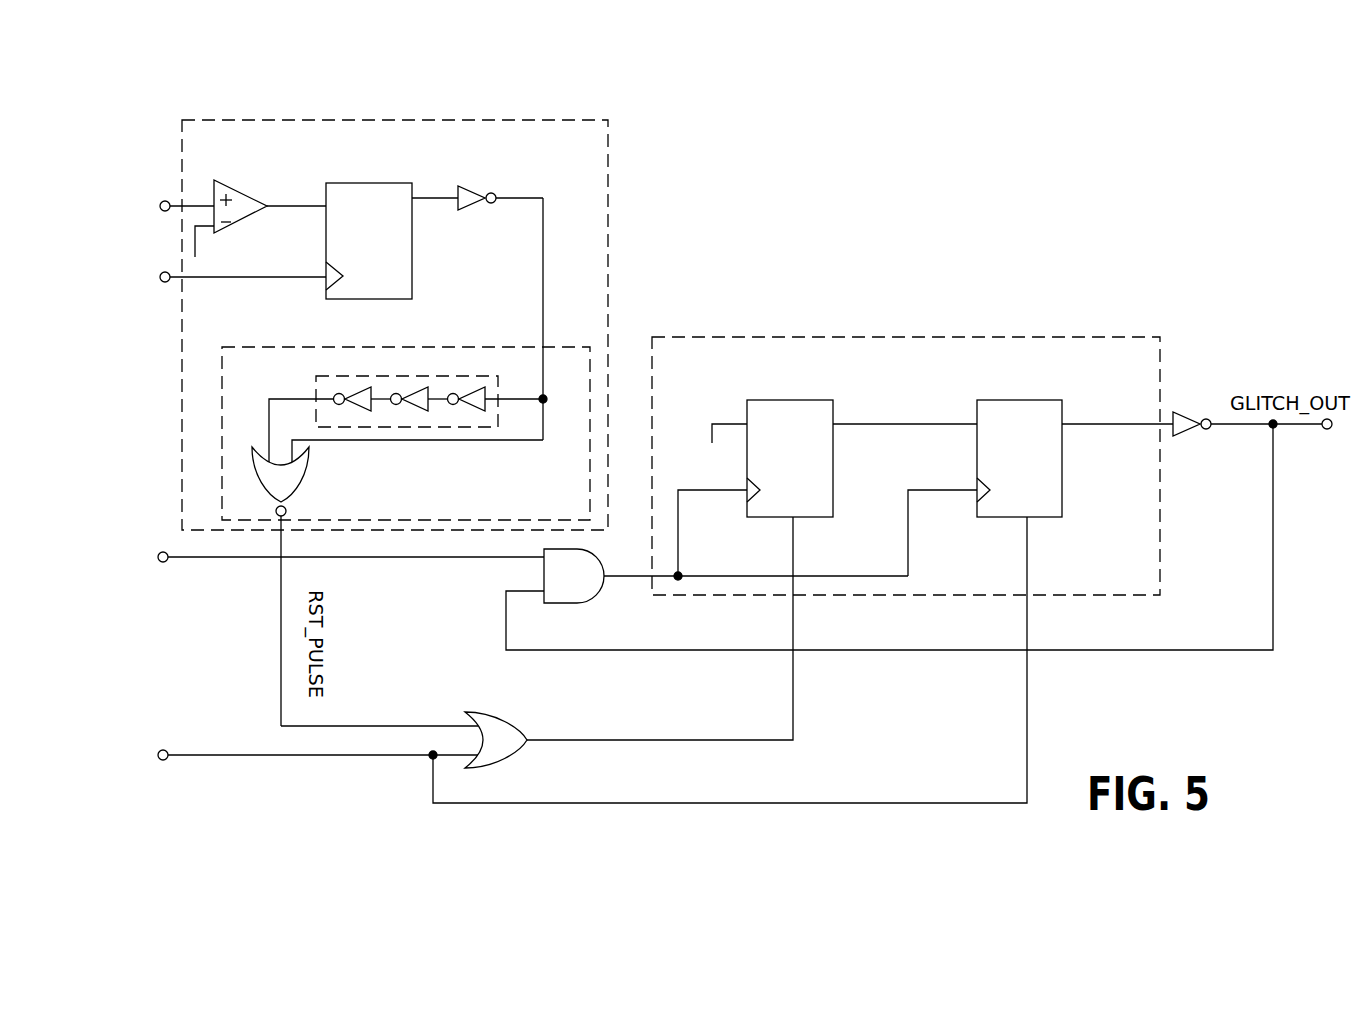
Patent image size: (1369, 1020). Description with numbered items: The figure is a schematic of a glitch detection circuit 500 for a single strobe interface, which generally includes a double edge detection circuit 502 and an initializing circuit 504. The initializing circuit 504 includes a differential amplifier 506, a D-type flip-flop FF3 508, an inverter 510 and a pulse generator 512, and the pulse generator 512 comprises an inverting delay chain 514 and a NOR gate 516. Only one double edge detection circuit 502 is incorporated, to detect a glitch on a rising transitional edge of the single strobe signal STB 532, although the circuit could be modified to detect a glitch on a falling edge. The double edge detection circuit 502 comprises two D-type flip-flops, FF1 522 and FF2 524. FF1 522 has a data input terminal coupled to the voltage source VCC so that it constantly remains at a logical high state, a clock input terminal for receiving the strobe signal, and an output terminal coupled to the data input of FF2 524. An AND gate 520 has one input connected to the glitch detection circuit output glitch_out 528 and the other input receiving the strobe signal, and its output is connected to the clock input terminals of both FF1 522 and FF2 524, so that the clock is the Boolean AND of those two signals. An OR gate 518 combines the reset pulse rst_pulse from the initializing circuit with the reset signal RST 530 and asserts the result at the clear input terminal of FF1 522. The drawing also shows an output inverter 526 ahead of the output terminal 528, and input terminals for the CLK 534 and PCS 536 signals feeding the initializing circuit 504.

The glitch detection circuit 500 is at (895, 200).
The double edge detection circuit 502 is at (1088, 337).
The initializing circuit 504 is at (535, 120).
The differential amplifier 506 is at (248, 192).
The D-type flip-flop (FF3) 508 is at (363, 183).
The inverter 510 is at (467, 183).
The pulse generator 512 is at (453, 347).
The inverting delay chain 514 is at (487, 376).
The NOR gate 516 is at (312, 483).
The OR gate 518 is at (495, 712).
The AND gate 520 is at (585, 603).
The D-type flip-flop FF1 522 is at (785, 400).
The D-type flip-flop FF2 524 is at (1015, 400).
The output inverter 526 is at (1178, 440).
The output of the glitch detection circuit (glitch_out) 528 is at (1323, 430).
The reset signal (RST) 530 is at (160, 761).
The strobe signal (STB) 532 is at (160, 563).
The CLK terminal 534 is at (164, 283).
The PCS terminal 536 is at (165, 200).